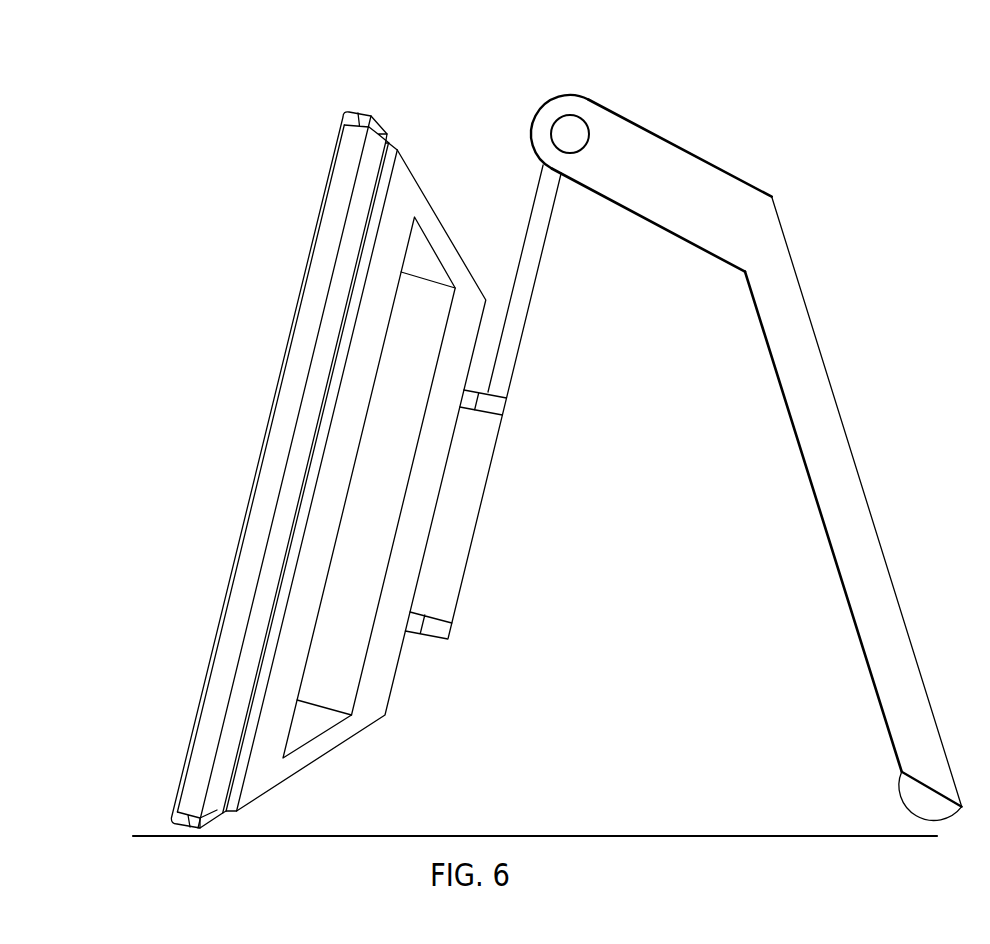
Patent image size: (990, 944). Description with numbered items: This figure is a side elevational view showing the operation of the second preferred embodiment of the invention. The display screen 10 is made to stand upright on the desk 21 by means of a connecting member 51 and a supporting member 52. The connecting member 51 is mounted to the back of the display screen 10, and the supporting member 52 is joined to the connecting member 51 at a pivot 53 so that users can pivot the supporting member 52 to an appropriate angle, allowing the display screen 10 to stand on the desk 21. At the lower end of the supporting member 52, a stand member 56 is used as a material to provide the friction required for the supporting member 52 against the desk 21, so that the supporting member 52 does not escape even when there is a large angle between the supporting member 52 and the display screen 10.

The display screen 10 is at (362, 112).
The desk 21 is at (637, 836).
The connecting member 51 is at (485, 498).
The supporting member 52 is at (892, 362).
The pivot hole 53 is at (578, 124).
The stand member 56 is at (910, 811).